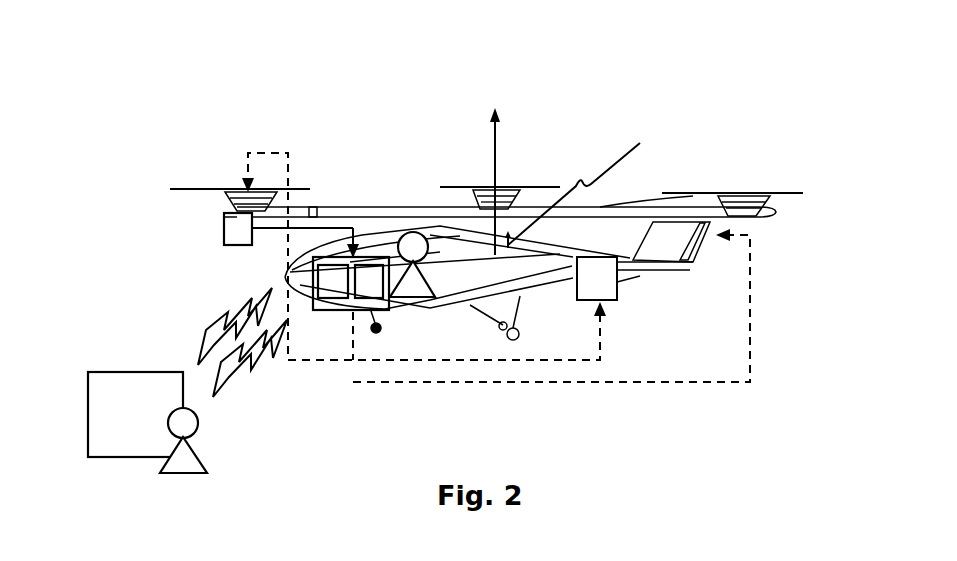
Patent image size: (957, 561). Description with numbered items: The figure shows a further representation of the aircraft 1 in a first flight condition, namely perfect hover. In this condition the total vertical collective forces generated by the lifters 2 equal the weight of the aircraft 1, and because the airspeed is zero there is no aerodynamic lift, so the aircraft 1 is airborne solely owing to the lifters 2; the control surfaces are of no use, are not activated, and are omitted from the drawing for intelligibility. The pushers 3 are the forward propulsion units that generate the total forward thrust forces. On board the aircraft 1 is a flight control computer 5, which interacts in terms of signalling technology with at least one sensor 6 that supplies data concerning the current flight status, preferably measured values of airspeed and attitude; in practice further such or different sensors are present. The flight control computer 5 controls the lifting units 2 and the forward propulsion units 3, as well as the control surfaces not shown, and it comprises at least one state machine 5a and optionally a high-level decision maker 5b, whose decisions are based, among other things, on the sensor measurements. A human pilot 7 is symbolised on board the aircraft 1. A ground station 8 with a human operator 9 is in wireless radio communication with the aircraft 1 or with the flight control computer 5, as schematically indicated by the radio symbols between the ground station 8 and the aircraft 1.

The aircraft 1 is at (657, 427).
The lifters 2 is at (749, 193).
The pushers 3 is at (618, 288).
The flight control computer 5 is at (327, 311).
The state machine 5a is at (328, 265).
The high-level decision maker 5b is at (370, 265).
The sensor 6 is at (224, 230).
The pilot 7 is at (421, 300).
The ground station 8 is at (117, 378).
The human operator 9 is at (190, 458).